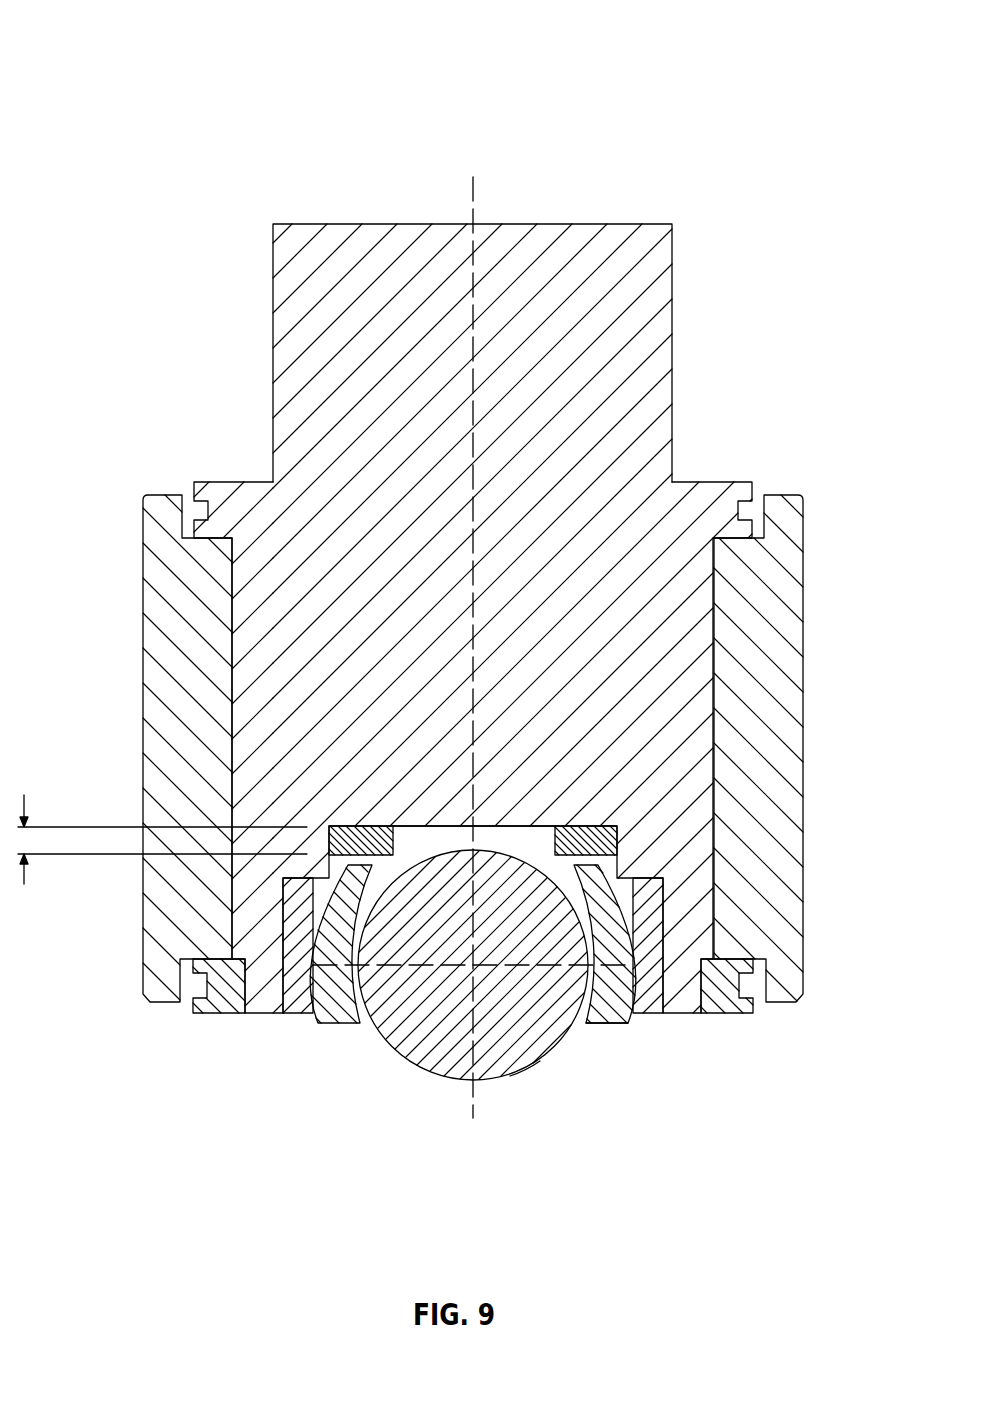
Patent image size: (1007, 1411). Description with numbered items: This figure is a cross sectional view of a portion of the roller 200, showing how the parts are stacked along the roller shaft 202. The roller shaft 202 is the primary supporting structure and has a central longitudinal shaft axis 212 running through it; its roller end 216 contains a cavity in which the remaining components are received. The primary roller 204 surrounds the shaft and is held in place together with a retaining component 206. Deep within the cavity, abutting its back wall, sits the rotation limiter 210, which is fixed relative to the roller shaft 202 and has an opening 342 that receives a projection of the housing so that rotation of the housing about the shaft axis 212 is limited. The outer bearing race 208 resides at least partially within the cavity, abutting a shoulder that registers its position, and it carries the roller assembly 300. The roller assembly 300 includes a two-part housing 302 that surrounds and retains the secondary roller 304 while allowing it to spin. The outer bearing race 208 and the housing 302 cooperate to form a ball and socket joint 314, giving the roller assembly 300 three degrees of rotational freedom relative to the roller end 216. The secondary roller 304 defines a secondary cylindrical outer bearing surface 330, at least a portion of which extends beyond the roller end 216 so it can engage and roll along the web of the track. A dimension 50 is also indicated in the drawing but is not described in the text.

The roller 200 is at (157, 24).
The roller shaft 202 is at (672, 283).
The primary roller 204 is at (155, 672).
The retaining component 206 is at (215, 1015).
The outer bearing race 208 is at (283, 950).
The rotation limiter 210 is at (372, 827).
The central longitudinal shaft axis 212 is at (473, 207).
The roller end 216 is at (678, 795).
The offset distance 50 is at (26, 812).
The roller assembly 300 is at (473, 992).
The housing 302 is at (345, 1025).
The secondary roller 304 is at (530, 952).
The ball and socket joint 314 is at (633, 1026).
The secondary cylindrical outer bearing surface 330 is at (537, 1063).
The opening 342 is at (506, 842).